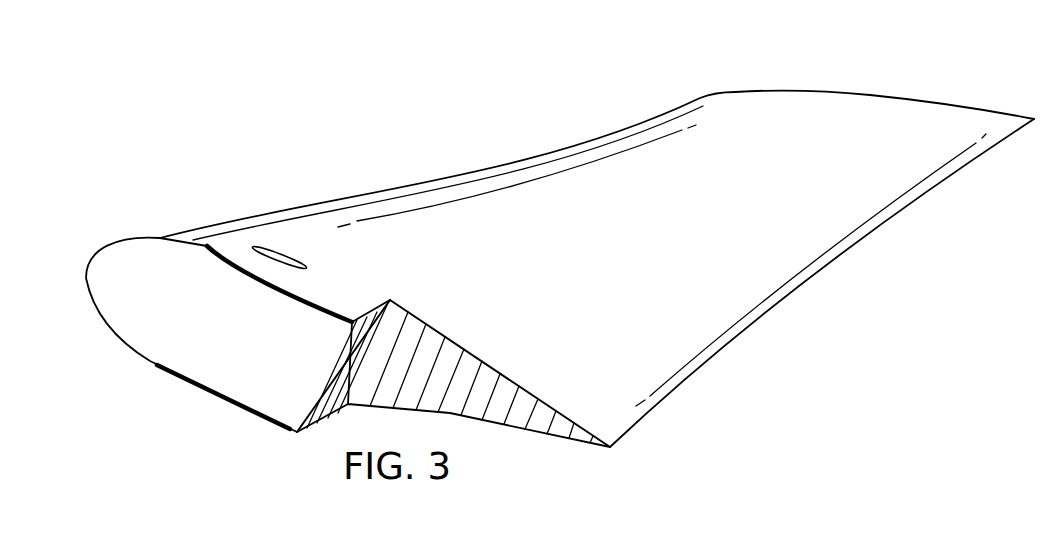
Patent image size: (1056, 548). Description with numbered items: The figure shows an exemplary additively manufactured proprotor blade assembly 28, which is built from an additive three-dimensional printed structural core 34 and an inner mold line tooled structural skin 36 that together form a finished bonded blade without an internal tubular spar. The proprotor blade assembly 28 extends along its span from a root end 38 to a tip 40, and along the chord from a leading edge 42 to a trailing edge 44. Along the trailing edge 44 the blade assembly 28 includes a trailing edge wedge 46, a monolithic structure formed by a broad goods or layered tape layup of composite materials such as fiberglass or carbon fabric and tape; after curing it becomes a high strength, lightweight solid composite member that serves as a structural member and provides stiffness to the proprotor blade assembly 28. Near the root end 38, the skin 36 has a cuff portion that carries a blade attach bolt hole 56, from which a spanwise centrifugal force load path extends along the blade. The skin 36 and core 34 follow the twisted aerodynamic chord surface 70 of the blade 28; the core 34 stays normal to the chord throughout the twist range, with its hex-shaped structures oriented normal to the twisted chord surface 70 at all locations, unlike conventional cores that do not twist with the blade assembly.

The proprotor blade assembly 28 is at (386, 86).
The structural core 34 is at (125, 313).
The structural skin 36 is at (822, 84).
The root end 38 is at (217, 240).
The tip 40 is at (921, 99).
The leading edge 42 is at (502, 165).
The trailing edge 44 is at (818, 272).
The trailing edge wedge 46 is at (608, 450).
The blade attach bolt hole 56 is at (277, 259).
The twisted aerodynamic chord surface 70 is at (573, 162).